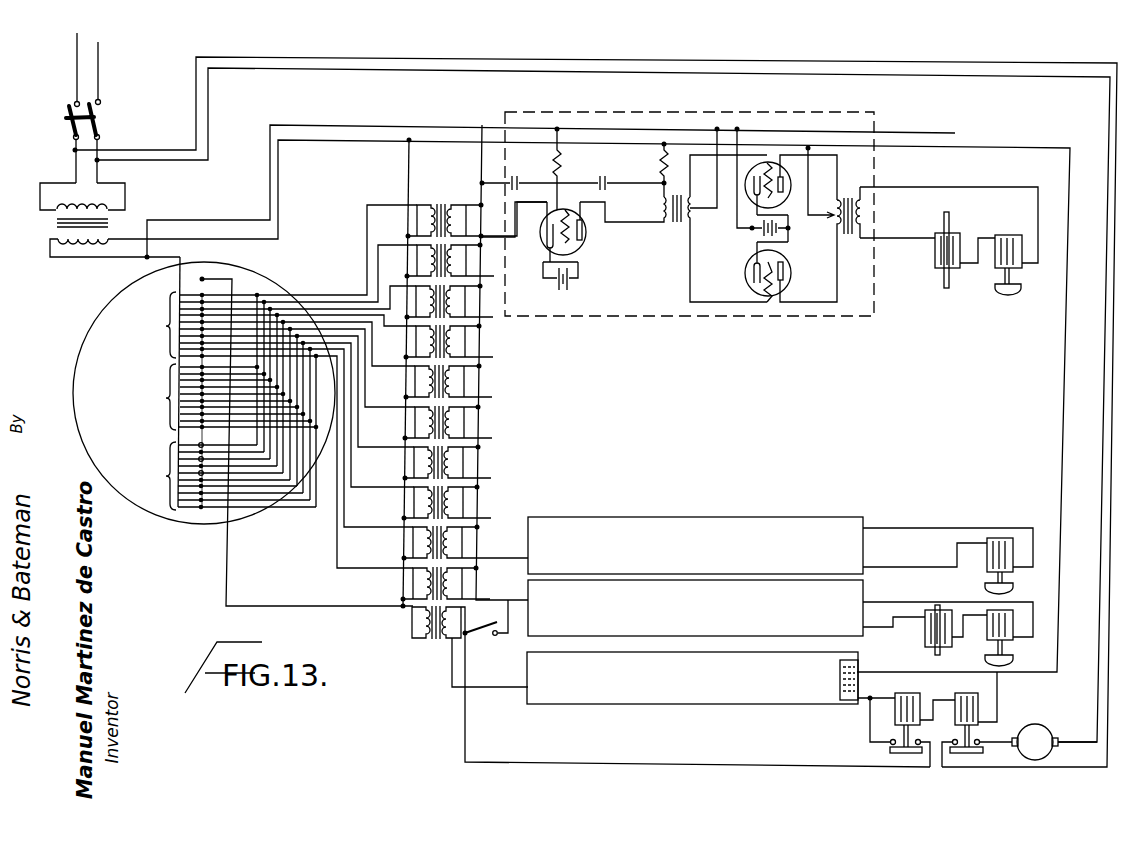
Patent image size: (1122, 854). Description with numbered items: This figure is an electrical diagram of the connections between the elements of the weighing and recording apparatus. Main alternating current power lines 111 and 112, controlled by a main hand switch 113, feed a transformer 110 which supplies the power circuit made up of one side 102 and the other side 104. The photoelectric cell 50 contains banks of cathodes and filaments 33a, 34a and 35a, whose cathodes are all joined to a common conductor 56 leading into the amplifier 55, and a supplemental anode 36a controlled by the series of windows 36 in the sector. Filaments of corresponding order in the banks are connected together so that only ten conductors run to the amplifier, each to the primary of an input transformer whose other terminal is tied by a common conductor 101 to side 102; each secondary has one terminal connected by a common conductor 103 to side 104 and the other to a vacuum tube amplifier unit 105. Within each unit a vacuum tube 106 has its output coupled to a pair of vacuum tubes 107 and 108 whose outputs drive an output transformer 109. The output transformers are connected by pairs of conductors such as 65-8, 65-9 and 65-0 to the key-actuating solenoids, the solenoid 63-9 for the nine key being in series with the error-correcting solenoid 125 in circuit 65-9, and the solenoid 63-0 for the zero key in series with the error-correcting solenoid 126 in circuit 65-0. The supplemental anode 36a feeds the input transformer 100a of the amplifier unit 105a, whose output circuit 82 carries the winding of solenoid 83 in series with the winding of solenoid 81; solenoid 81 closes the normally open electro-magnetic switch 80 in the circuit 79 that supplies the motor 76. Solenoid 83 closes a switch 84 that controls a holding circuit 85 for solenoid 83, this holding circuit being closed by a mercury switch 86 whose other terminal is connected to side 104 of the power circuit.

The main alternating current power line 111 is at (74, 66).
The main alternating current power line 112 is at (104, 55).
The main hand switch 113 is at (104, 128).
The transformer 110 is at (48, 218).
The circuit 79 is at (748, 61).
The side of power circuit 104 is at (404, 116).
The side of power circuit 102 is at (312, 148).
The common conductor 56 is at (181, 258).
The photoelectric cell 50 is at (95, 455).
The supplemental filament or anode 36a is at (215, 283).
The slots or windows 36 is at (180, 288).
The bank of cathodes and filaments 35a is at (272, 386).
The bank of cathodes and filaments 34a is at (215, 397).
The bank of cathodes and filaments 33a is at (216, 402).
The common conductor 101 is at (406, 183).
The input transformer 100a is at (432, 644).
The mercury switch 86 is at (490, 628).
The common conductor 103 is at (480, 182).
The vacuum tube amplifier unit 105 is at (556, 592).
The vacuum tube 106 is at (584, 253).
The vacuum tube 107 is at (748, 197).
The vacuum tube 108 is at (747, 273).
The output transformer 109 is at (849, 196).
The pair of conductors 65-0 is at (923, 189).
The solenoid 126 is at (935, 250).
The solenoid 63-0 is at (995, 266).
The amplifier 55 is at (728, 404).
The amplifier unit 105a is at (587, 694).
The output circuit 82 is at (858, 667).
The pair of conductors 65-8 is at (912, 514).
The pair of conductors 65-9 is at (895, 597).
The solenoid 125 is at (925, 634).
The solenoid 63-9 is at (1013, 636).
The solenoid 83 is at (906, 710).
The holding circuit 85 is at (868, 722).
The switch 84 is at (893, 753).
The electromagnet or solenoid 81 is at (980, 707).
The electro-magnetic switch 80 is at (968, 756).
The motor 76 is at (1036, 730).